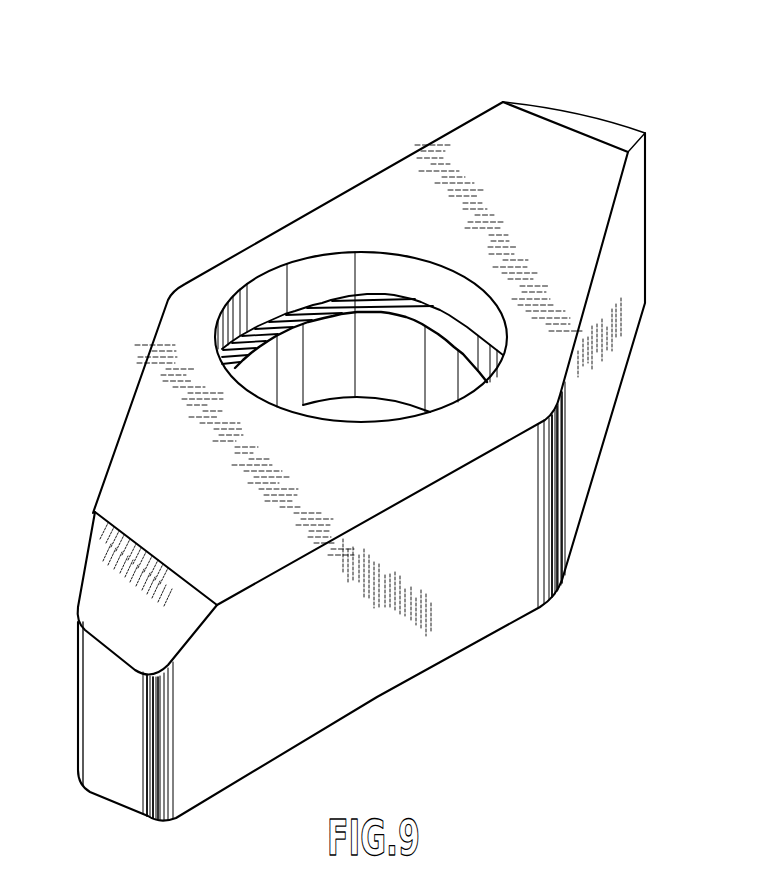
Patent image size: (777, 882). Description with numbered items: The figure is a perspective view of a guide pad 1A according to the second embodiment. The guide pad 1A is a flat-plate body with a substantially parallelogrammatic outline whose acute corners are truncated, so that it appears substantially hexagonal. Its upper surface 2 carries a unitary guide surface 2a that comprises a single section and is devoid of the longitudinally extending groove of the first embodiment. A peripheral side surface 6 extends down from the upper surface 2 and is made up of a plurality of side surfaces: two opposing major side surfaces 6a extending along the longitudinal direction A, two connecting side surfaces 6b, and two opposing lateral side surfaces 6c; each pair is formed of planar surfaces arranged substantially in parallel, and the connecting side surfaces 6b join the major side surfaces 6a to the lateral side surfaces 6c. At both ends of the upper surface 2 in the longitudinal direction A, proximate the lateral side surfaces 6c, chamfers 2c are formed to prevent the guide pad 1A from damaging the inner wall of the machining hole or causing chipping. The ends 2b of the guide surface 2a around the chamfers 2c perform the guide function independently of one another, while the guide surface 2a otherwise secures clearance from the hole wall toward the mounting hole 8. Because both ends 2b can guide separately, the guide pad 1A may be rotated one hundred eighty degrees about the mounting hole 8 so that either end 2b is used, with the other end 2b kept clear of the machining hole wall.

The guide pad 1A is at (594, 54).
The upper surface 2 is at (265, 252).
The guide surface 2a is at (585, 205).
The end of guide surface 2b is at (527, 137).
The chamfer 2c is at (608, 127).
The peripheral side surface 6 is at (447, 606).
The major side surface 6a is at (589, 401).
The connecting side surface 6b is at (390, 664).
The lateral side surface 6c is at (118, 780).
The mounting hole 8 is at (382, 280).
The longitudinal direction A is at (230, 201).